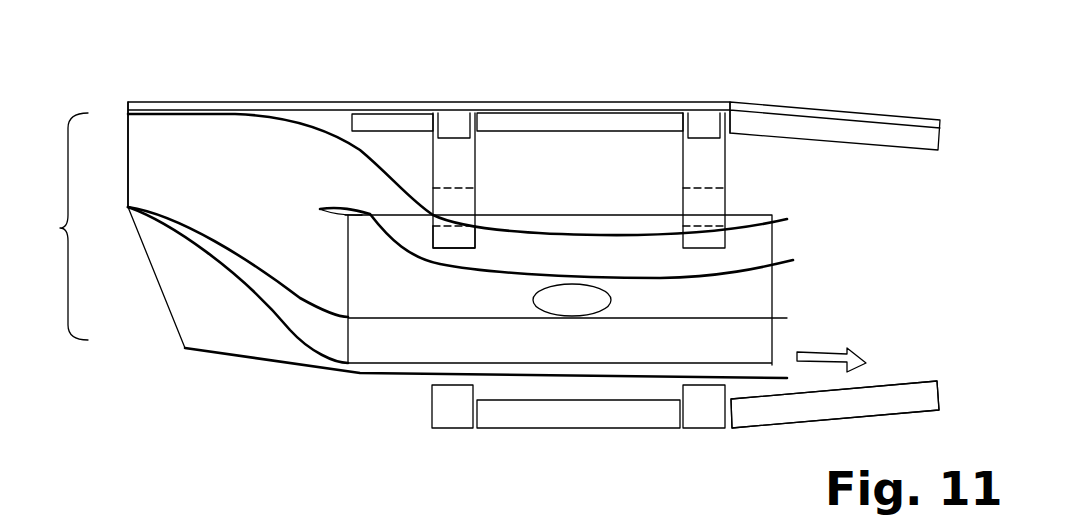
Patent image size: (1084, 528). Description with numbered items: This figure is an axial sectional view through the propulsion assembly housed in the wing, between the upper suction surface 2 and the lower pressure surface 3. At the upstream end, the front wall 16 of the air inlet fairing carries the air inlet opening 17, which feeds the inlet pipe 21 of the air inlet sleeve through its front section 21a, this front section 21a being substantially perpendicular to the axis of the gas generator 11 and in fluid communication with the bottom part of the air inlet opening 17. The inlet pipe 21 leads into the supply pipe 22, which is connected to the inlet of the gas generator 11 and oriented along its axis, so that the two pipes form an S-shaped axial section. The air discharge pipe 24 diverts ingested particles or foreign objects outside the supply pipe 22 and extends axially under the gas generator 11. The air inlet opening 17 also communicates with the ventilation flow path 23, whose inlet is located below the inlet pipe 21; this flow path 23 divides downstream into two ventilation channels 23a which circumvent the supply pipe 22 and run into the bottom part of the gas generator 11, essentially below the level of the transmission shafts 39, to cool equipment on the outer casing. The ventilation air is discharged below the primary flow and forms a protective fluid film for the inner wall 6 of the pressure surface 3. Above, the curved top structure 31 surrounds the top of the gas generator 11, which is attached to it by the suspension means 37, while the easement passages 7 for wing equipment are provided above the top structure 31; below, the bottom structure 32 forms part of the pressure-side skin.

The upper suction surface 2 is at (793, 103).
The lower pressure surface 3 is at (770, 430).
The inner wall 6 is at (896, 383).
The easement passages 7 is at (452, 117).
The gas generator 11 is at (382, 343).
The front wall 16 is at (122, 225).
The air inlet opening 17 is at (58, 226).
The inlet pipe 21 is at (200, 148).
The front section 21a is at (128, 152).
The supply pipe 22 is at (268, 258).
The ventilation flow path 23 is at (209, 313).
The ventilation channels 23a is at (527, 370).
The air discharge pipe 24 is at (378, 190).
The top structure 31 is at (458, 158).
The bottom structure 32 is at (624, 415).
The suspension means 37 is at (477, 200).
The transmission shafts 39 is at (572, 298).